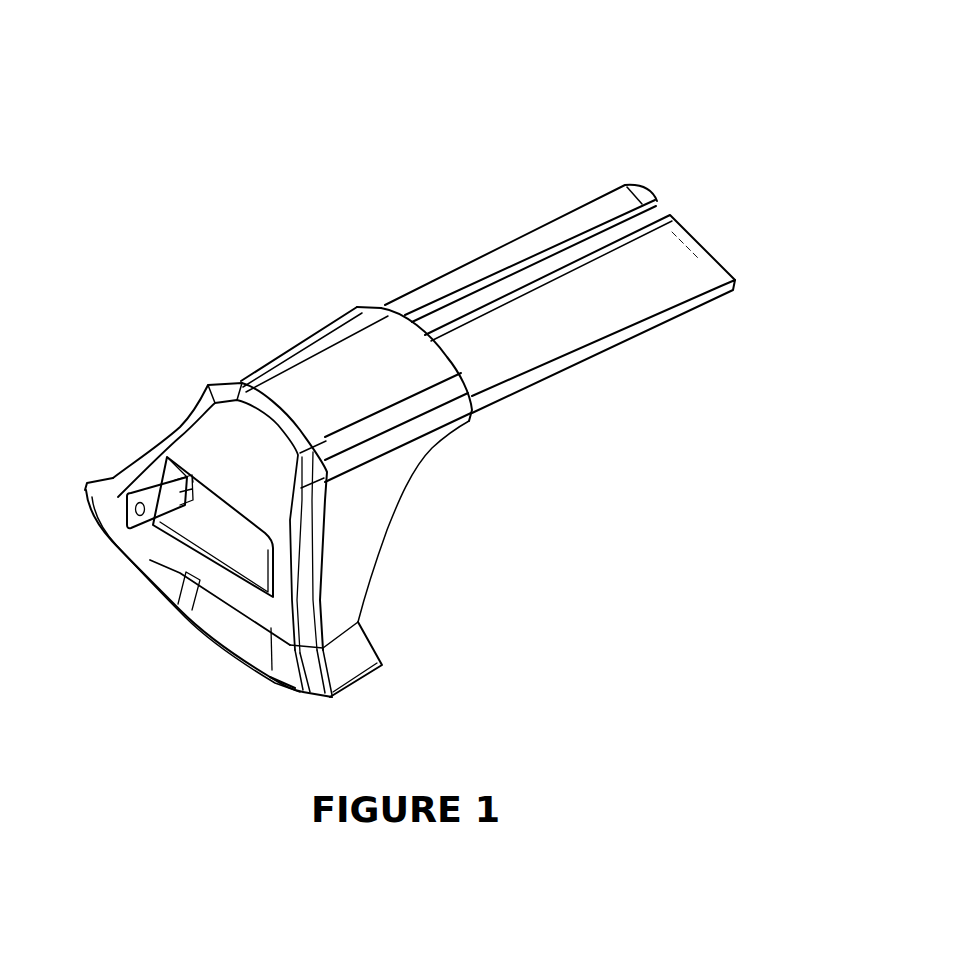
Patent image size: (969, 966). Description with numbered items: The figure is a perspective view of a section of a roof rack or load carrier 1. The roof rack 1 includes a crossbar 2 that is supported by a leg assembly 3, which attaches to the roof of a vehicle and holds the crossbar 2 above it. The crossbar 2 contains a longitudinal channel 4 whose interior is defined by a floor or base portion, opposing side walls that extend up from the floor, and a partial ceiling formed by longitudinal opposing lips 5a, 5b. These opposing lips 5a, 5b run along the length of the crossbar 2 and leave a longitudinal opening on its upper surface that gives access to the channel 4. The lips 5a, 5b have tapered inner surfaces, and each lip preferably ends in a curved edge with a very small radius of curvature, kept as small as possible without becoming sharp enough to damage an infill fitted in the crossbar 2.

The roof rack 1 is at (434, 180).
The crossbar 2 is at (538, 336).
The leg assembly 3 is at (361, 510).
The longitudinal channel 4 is at (543, 266).
The lip 5a is at (599, 229).
The lip 5b is at (648, 232).